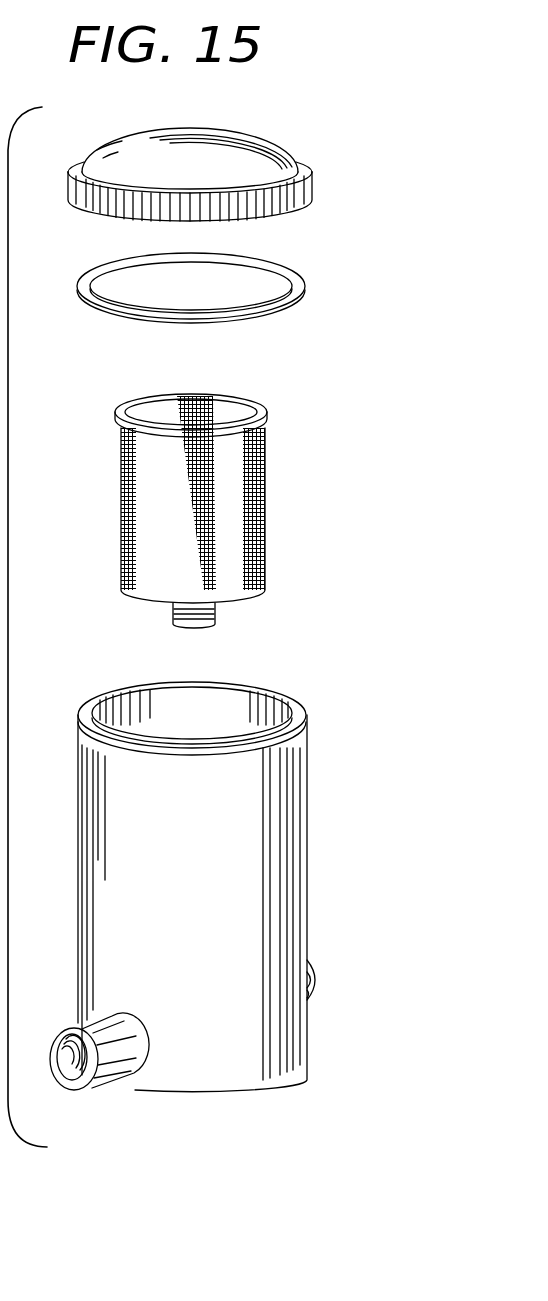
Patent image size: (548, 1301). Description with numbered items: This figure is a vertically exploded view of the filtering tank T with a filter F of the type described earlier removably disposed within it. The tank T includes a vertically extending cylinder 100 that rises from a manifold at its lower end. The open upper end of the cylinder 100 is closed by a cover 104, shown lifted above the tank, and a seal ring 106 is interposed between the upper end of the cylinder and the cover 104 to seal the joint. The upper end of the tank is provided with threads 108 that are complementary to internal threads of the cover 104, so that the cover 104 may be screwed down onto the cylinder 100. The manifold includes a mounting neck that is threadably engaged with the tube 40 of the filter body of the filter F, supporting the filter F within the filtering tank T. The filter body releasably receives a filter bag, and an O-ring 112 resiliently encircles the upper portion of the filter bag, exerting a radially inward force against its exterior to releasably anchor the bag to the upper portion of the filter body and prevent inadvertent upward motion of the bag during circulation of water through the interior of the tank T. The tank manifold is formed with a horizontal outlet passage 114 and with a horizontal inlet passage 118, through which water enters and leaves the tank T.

The cover 104 is at (247, 152).
The seal ring 106 is at (287, 272).
The O-ring 112 is at (263, 425).
The filter F is at (223, 527).
The tube 40 is at (202, 625).
The threads 108 is at (303, 723).
The cylinder 100 is at (214, 908).
The filtering tank T is at (194, 889).
The outlet passage 114 is at (310, 972).
The inlet passage 118 is at (62, 1087).